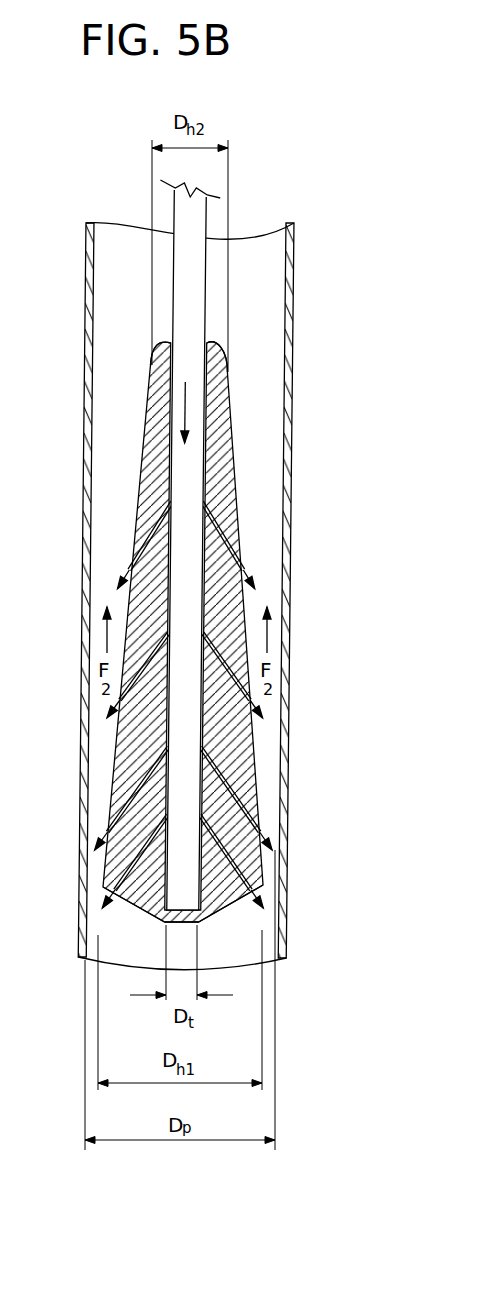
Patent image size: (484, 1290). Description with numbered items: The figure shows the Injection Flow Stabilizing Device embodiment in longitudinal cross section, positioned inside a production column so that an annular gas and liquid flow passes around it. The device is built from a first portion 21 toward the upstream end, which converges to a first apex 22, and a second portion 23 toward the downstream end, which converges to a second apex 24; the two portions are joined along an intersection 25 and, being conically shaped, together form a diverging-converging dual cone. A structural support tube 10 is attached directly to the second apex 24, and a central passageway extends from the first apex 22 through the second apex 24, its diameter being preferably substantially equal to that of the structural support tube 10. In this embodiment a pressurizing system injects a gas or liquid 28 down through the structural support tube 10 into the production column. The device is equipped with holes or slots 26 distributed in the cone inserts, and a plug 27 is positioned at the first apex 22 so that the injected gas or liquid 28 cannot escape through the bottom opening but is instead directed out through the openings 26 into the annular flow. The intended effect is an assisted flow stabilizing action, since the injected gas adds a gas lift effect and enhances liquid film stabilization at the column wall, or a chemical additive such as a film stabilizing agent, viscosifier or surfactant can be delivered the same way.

The structural support tube 10 is at (175, 230).
The first portion 21 is at (232, 903).
The first apex 22 is at (177, 932).
The second portion 23 is at (138, 480).
The second apex 24 is at (187, 337).
The intersection 25 is at (268, 873).
The holes or slots 26 is at (225, 533).
The plug 27 is at (183, 930).
The injected gas or liquid 28 is at (190, 410).